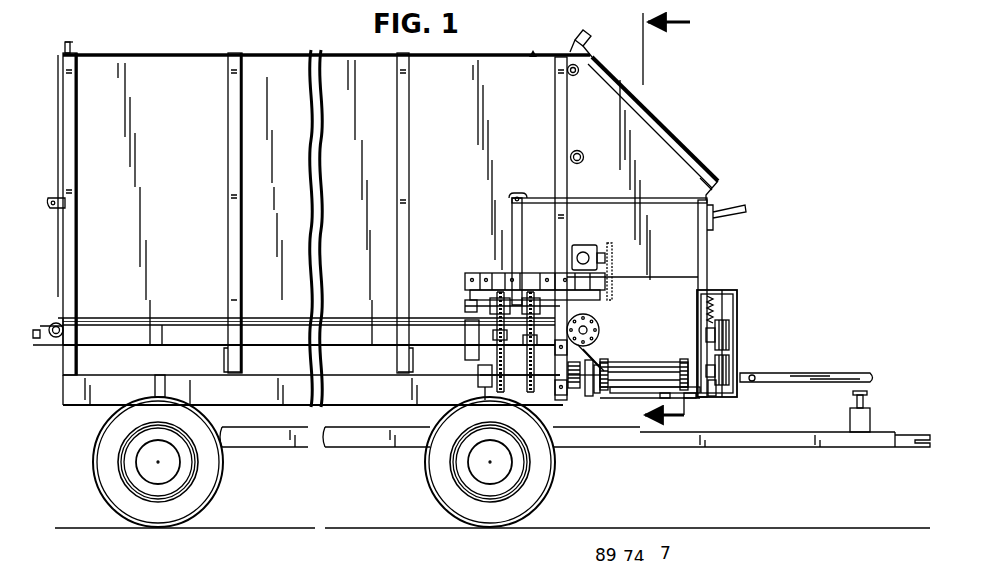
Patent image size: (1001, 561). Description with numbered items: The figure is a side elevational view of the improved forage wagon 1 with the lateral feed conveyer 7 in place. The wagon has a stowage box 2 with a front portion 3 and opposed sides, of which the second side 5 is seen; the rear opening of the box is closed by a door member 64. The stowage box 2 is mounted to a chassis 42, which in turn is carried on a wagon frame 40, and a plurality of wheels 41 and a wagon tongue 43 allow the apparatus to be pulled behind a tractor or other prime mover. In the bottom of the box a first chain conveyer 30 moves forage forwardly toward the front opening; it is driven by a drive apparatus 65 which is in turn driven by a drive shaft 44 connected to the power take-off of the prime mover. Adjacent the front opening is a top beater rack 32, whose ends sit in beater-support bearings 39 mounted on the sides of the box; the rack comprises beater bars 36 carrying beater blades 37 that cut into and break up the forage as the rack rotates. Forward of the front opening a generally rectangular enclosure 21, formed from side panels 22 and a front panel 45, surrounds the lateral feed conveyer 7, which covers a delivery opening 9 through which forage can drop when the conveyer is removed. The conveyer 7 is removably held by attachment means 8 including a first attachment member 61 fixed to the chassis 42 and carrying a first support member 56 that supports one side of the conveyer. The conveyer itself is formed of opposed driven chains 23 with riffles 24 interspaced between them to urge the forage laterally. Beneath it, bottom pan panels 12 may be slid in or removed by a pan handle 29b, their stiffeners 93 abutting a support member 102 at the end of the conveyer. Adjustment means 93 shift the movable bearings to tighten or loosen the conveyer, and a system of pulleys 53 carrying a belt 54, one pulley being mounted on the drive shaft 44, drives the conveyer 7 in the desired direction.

The forage wagon 1 is at (686, 95).
The stowage box 2 is at (266, 74).
The front portion 3 is at (561, 46).
The second side 5 is at (348, 70).
The lateral feed conveyer 7 is at (661, 355).
The attachment means 8 is at (586, 402).
The delivery opening 9 is at (625, 407).
The bottom pan panel 12 is at (668, 401).
The rectangular enclosure 21 is at (708, 162).
The side panel 22 is at (668, 160).
The driven chain 23 is at (616, 360).
The riffle 24 is at (648, 360).
The pan handle 29b is at (642, 405).
The first chain conveyer 30 is at (52, 314).
The top beater rack 32 is at (589, 50).
The beater bar 36 is at (568, 57).
The beater blade 37 is at (535, 52).
The beater-support bearing 39 is at (566, 71).
The wagon frame 40 is at (308, 449).
The wheel 41 is at (110, 497).
The chassis 42 is at (76, 410).
The wagon tongue 43 is at (749, 448).
The drive shaft 44 is at (836, 372).
The front panel 45 is at (708, 268).
The pulley 53 is at (736, 323).
The belt 54 is at (738, 358).
The first support member 56 is at (589, 398).
The first attachment member 61 is at (592, 351).
The door member 64 is at (60, 150).
The drive apparatus 65 is at (481, 261).
The adjustment means 93 is at (596, 397).
The support member 102 is at (688, 401).